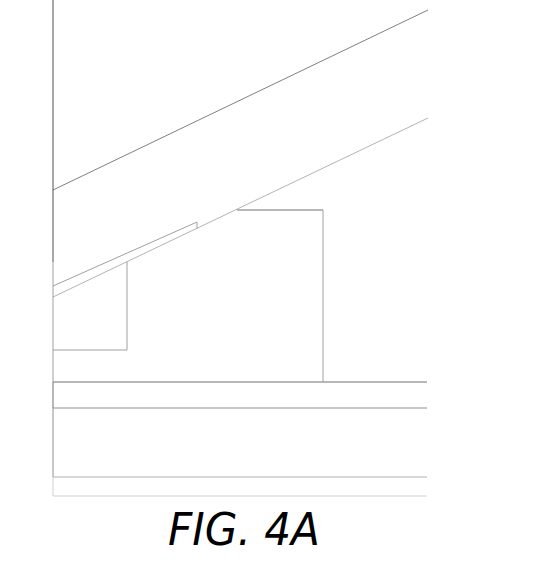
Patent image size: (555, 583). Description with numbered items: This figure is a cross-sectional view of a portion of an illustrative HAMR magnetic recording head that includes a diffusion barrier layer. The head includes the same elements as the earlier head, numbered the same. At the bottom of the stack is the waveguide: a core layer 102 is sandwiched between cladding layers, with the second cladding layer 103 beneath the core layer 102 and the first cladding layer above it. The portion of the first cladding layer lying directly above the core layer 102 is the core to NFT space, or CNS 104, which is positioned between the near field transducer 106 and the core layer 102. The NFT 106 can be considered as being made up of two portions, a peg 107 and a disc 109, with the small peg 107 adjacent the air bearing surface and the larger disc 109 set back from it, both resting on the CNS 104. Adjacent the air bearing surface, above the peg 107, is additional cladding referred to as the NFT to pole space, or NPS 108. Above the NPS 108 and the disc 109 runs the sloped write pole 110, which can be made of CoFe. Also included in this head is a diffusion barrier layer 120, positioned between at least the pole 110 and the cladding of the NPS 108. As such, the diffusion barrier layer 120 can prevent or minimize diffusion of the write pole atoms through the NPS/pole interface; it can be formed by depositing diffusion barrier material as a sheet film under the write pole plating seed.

The core layer 102 is at (140, 452).
The second cladding layer 103 is at (170, 502).
The core to NFT space (CNS) 104 is at (221, 407).
The near field transducer (NFT) 106 is at (295, 210).
The peg 107 is at (115, 381).
The NFT to pole space (NPS) 108 is at (106, 332).
The disc 109 is at (263, 284).
The write pole 110 is at (208, 177).
The diffusion barrier layer 120 is at (147, 243).